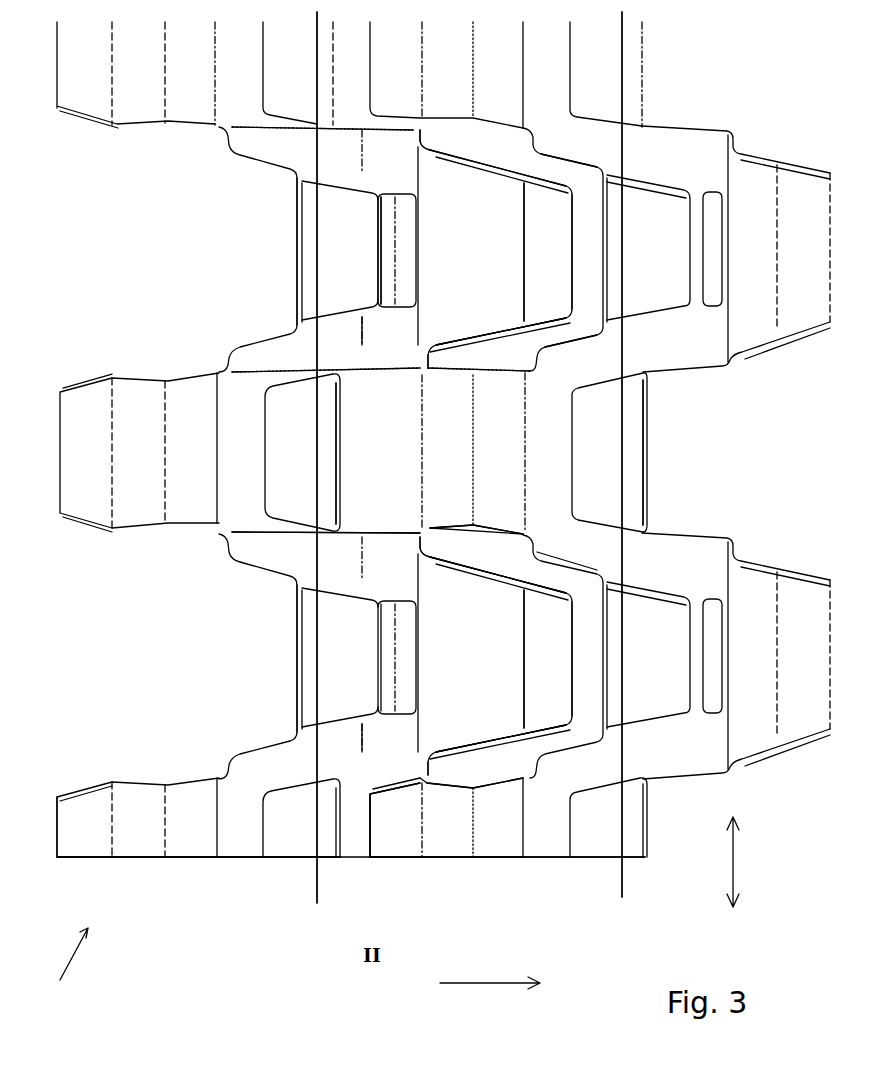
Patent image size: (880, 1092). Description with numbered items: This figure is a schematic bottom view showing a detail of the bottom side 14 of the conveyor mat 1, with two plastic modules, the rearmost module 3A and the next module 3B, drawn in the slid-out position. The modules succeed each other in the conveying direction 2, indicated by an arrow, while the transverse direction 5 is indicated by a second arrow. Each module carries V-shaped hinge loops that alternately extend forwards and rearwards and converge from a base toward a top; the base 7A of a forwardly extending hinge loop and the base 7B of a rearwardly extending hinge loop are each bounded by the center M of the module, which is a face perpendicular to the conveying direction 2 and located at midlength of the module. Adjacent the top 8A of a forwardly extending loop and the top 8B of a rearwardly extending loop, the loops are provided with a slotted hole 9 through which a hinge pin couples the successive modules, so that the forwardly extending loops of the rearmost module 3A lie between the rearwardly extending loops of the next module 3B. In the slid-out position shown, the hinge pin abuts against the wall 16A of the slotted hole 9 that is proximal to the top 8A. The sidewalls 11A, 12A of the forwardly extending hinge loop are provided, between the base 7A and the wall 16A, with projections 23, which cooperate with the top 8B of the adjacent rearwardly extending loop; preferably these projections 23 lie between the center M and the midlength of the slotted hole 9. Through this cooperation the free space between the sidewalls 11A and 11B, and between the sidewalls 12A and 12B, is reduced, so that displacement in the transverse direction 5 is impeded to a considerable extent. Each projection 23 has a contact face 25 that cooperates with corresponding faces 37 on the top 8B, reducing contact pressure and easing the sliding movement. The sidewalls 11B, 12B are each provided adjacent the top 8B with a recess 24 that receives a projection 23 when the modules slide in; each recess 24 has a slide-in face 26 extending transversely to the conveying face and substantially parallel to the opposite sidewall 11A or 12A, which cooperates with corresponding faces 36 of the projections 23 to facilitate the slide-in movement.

The conveyor mat 1 is at (67, 965).
The conveying direction 2 is at (490, 996).
The rearmost module 3A is at (195, 857).
The next module 3B is at (393, 857).
The transverse direction 5 is at (743, 862).
The base of forwardly extending hinge loop 7A is at (317, 667).
The base of rearwardly extending hinge loop 7B is at (622, 450).
The top of forwardly extending hinge loop 8A is at (588, 665).
The top of rearwardly extending hinge loop 8B is at (370, 830).
The slotted hole 9 is at (496, 657).
The sidewall of forwardly extending hinge loop 11A is at (458, 590).
The sidewall of rearwardly extending hinge loop 11B is at (543, 552).
The sidewall of forwardly extending hinge loop 12A is at (465, 743).
The sidewall of rearwardly extending hinge loop 12B is at (562, 343).
The bottom side 14 is at (127, 827).
The wall of slotted hole proximal to the top 16A is at (553, 653).
The projection 23 is at (383, 155).
The recess 24 is at (470, 367).
The contact face 25 is at (412, 768).
The slide-in face 26 is at (447, 523).
The face of projection 36 is at (376, 534).
The face of top of hinge loop 37 is at (415, 787).
The center of the module M is at (469, 471).